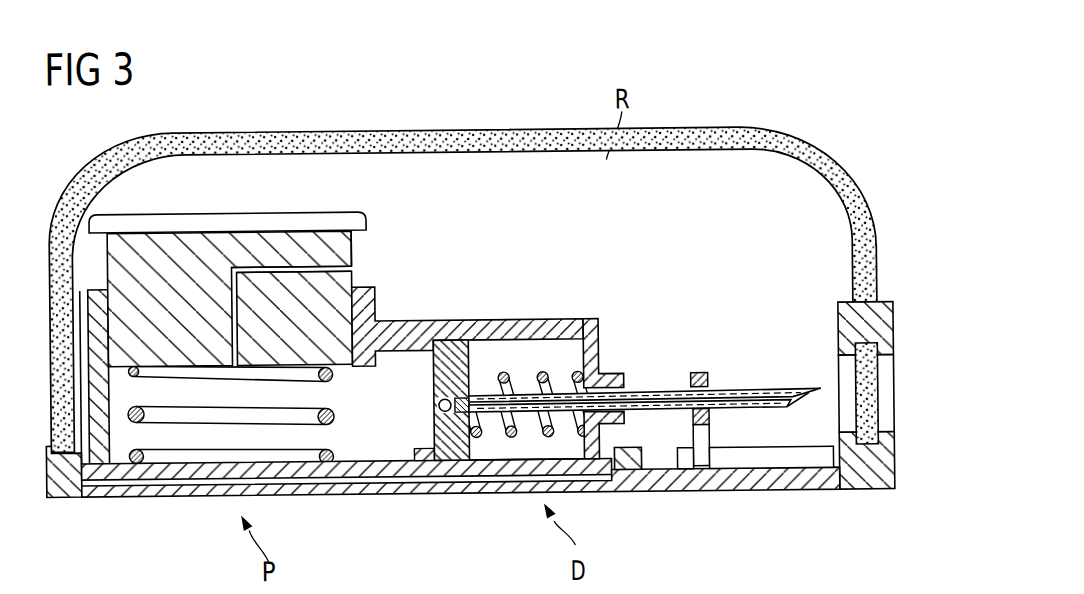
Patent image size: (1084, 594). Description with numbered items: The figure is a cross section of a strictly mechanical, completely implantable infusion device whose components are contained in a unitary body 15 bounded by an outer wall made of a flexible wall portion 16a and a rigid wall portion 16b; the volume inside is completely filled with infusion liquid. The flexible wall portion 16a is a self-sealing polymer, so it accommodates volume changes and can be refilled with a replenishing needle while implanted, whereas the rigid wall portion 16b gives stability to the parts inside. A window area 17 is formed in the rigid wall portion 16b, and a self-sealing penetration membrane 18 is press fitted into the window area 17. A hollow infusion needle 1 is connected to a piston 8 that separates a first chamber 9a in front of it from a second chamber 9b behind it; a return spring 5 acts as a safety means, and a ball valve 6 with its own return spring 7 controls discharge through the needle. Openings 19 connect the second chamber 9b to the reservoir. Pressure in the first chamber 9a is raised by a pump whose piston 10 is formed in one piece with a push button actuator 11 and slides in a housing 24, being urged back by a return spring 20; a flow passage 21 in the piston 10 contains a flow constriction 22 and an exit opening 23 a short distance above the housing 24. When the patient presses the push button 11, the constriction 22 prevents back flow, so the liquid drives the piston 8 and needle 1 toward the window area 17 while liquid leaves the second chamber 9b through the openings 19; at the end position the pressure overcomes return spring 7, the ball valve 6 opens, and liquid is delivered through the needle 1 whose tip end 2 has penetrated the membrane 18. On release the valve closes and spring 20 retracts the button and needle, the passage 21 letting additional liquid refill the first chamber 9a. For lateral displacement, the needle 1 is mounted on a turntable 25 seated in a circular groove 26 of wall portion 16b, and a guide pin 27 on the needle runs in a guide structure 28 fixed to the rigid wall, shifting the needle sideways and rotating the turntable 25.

The infusion needle 1 is at (767, 393).
The tip end 2 is at (808, 393).
The return spring 5 is at (540, 371).
The ball valve 6 is at (437, 403).
The return spring 7 is at (473, 403).
The piston 8 is at (455, 452).
The first chamber 9a is at (367, 474).
The second chamber 9b is at (503, 450).
The piston 10 is at (182, 242).
The actuator 11 is at (243, 216).
The unitary body 15 is at (848, 126).
The wall portion 16a is at (852, 207).
The wall portion 16b is at (885, 464).
The window area 17 is at (888, 414).
The penetration membrane 18 is at (867, 394).
The openings 19 is at (595, 356).
The return spring 20 is at (335, 412).
The flow passage 21 is at (337, 261).
The flow constriction 22 is at (290, 271).
The exit opening 23 is at (262, 261).
The housing 24 is at (363, 307).
The turntable 25 is at (207, 467).
The circular groove 26 is at (88, 483).
The guide pin 27 is at (702, 460).
The guide structure 28 is at (768, 463).